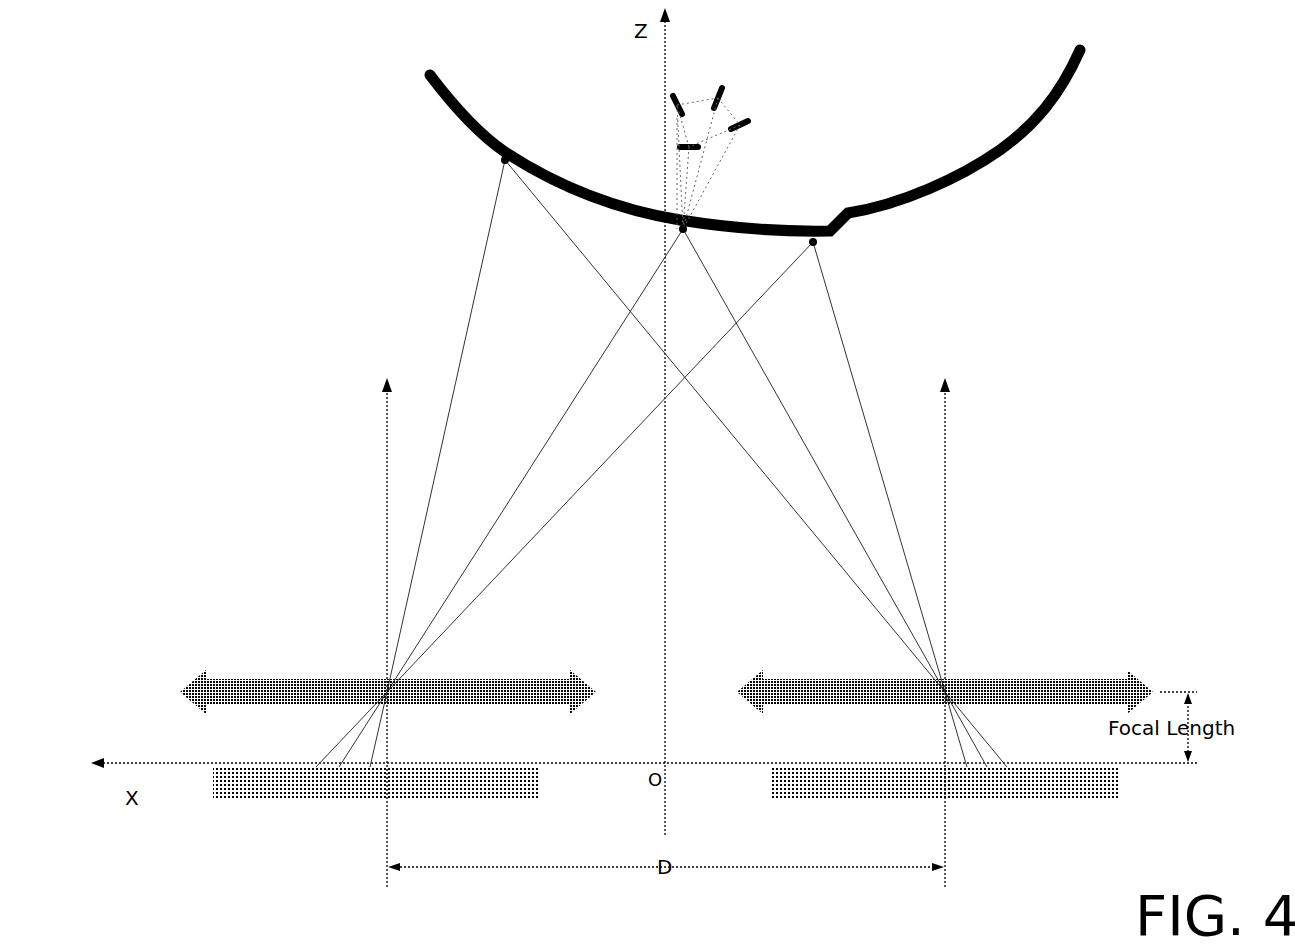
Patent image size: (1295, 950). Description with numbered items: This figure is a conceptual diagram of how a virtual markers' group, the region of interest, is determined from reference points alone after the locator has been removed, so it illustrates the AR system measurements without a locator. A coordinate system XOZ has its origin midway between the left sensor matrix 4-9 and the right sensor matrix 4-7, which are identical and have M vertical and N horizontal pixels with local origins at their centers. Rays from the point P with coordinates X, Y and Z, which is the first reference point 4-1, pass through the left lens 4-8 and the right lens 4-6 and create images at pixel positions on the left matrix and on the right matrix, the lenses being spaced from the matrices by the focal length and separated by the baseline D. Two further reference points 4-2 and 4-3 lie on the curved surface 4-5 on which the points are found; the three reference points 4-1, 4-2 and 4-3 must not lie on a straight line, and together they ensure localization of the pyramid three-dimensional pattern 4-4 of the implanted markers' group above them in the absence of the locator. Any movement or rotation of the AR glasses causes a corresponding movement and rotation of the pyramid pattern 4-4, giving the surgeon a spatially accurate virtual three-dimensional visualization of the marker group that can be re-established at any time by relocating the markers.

The reference point 4-1 is at (642, 250).
The reference point 4-2 is at (889, 268).
The reference point 4-3 is at (435, 192).
The pyramid 3D pattern 4-4 is at (777, 158).
The object surface 4-5 is at (766, 140).
The right lens 4-6 is at (945, 680).
The right sensor matrix (MxN) 4-7 is at (942, 784).
The left lens 4-8 is at (388, 680).
The left sensor matrix (MxN) 4-9 is at (371, 784).